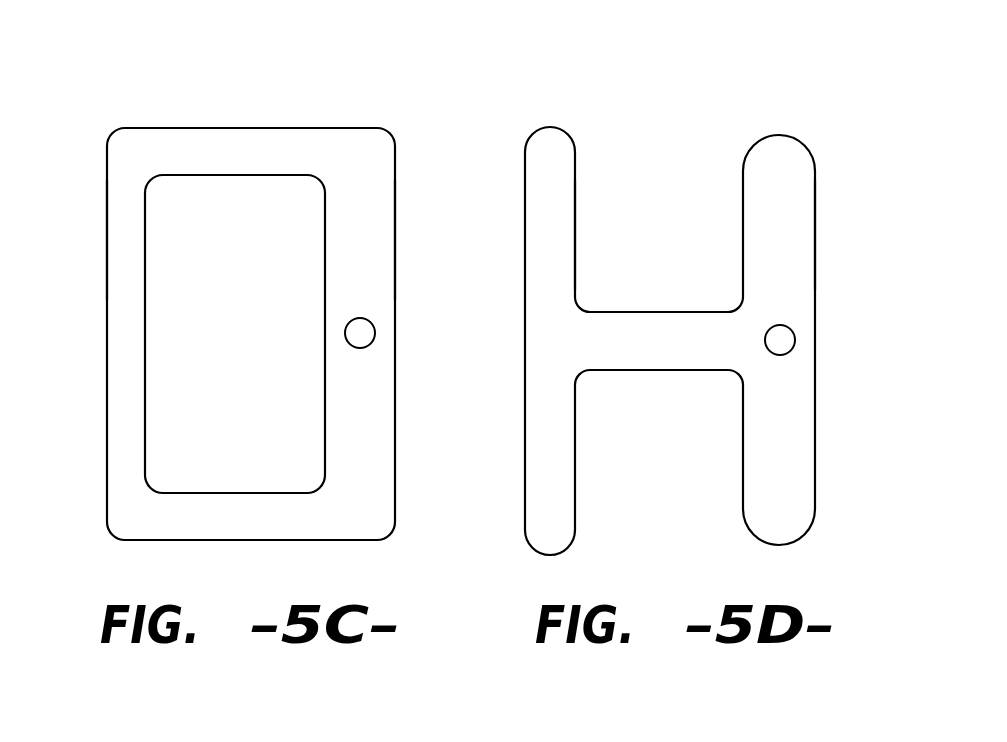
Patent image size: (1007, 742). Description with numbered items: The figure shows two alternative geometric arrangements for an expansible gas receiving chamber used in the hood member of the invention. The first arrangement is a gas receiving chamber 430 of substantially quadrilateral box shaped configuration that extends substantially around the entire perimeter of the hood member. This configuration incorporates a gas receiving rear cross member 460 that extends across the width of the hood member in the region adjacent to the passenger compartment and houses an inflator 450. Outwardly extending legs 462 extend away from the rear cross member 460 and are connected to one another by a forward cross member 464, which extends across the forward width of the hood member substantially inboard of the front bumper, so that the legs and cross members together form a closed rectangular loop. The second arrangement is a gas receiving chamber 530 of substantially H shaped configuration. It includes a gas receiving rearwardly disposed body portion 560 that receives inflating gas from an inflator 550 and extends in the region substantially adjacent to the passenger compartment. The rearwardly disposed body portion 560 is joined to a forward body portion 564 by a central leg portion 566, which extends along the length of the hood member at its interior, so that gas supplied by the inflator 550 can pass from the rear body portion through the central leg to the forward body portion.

In FIG. 5C, the gas receiving chamber 430 is at (117, 110).
In FIG. 5C, the outwardly extending legs 462 is at (227, 140).
In FIG. 5C, the gas receiving rear cross member 460 is at (370, 232).
In FIG. 5C, the forward cross member 464 is at (127, 218).
In FIG. 5C, the inflator 450 is at (371, 322).
In FIG. 5D, the gas receiving chamber 530 is at (517, 112).
In FIG. 5D, the forward body portion 564 is at (553, 203).
In FIG. 5D, the rearwardly disposed body portion 560 is at (797, 215).
In FIG. 5D, the central leg portion 566 is at (610, 328).
In FIG. 5D, the inflator 550 is at (790, 328).